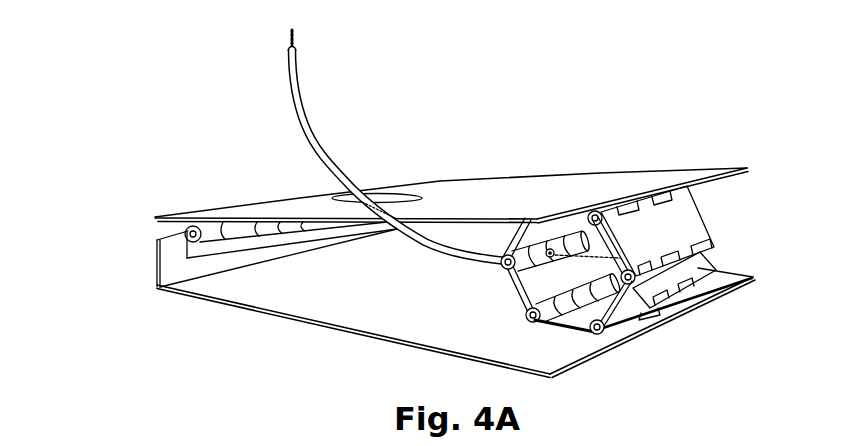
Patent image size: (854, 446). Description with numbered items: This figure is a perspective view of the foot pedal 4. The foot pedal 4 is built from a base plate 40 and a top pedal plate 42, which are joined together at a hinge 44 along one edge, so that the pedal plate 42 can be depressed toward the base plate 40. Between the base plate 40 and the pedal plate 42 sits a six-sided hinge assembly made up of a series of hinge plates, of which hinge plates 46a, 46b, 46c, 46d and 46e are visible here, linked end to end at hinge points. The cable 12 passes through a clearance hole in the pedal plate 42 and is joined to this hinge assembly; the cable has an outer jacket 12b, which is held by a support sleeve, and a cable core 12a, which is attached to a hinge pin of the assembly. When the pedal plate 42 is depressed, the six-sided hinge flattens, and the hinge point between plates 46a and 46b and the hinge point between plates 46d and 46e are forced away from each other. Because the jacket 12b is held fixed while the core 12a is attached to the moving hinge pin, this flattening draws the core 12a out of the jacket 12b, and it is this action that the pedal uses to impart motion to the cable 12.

The foot pedal 4 is at (731, 120).
The cable 12 is at (272, 68).
The cable core 12a is at (297, 40).
The outer jacket 12b is at (300, 80).
The base plate 40 is at (330, 322).
The top pedal plate 42 is at (486, 186).
The hinge 44 is at (185, 233).
The hinge plate 46a is at (677, 223).
The hinge plate 46b is at (680, 302).
The hinge plate 46c is at (570, 333).
The hinge plate 46d is at (522, 303).
The hinge plate 46e is at (493, 233).